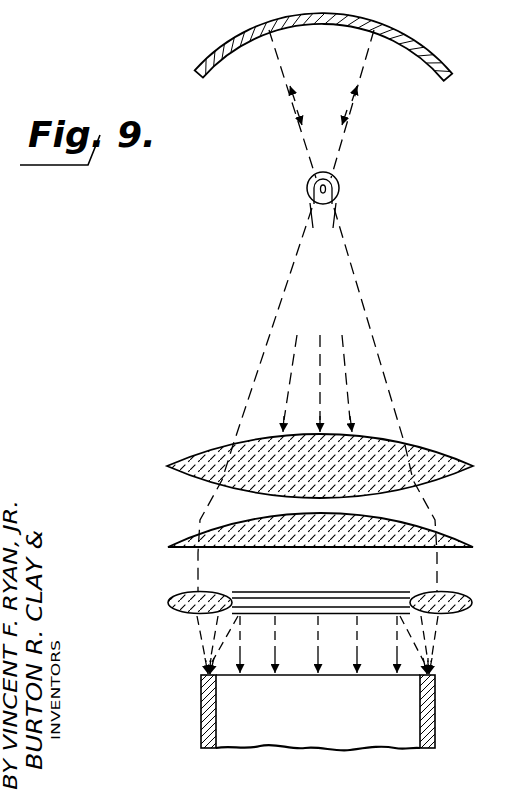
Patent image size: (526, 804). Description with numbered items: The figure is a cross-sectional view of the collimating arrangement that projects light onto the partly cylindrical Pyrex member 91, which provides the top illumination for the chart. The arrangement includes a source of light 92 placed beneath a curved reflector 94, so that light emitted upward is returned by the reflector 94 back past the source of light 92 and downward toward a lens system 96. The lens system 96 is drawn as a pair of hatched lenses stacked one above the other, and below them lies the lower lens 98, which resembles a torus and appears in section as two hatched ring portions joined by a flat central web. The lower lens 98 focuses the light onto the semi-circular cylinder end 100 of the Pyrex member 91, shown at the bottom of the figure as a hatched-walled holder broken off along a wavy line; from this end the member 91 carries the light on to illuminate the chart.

The reflector 94 is at (431, 64).
The source of light 92 is at (340, 182).
The lens system 96 is at (167, 447).
The lower lens 98 is at (465, 594).
The semi-circular cylinder end 100 is at (290, 680).
The partly cylindrical Pyrex member 91 is at (437, 703).